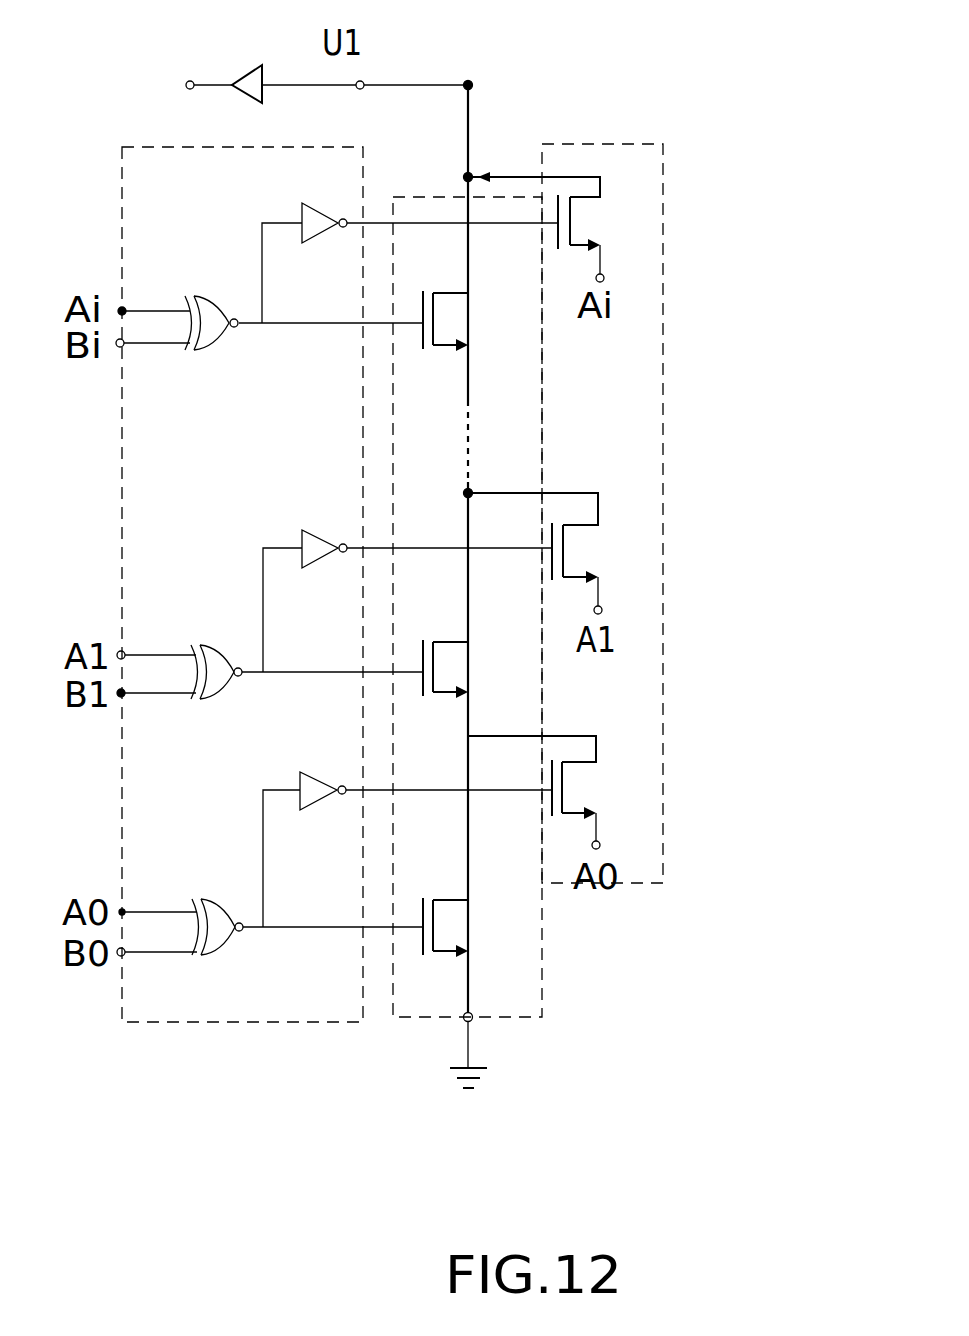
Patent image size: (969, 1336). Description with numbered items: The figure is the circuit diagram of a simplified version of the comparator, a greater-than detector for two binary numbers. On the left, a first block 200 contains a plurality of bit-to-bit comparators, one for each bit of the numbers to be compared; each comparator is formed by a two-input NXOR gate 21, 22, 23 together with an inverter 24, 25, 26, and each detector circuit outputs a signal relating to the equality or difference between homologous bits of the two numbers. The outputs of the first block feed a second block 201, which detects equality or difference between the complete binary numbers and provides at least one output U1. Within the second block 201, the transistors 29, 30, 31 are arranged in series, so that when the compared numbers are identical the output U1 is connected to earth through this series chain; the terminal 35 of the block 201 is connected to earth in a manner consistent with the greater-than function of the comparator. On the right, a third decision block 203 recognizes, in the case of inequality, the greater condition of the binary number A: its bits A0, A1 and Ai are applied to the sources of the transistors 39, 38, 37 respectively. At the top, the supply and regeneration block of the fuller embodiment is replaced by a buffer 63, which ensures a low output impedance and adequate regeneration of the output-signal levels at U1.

The NXOR gate 21 is at (215, 341).
The NXOR gate 22 is at (213, 648).
The NXOR gate 23 is at (217, 897).
The inverter 24 is at (317, 234).
The inverter 25 is at (320, 568).
The inverter 26 is at (311, 810).
The transistor 29 is at (443, 347).
The transistor 30 is at (445, 641).
The transistor 31 is at (448, 898).
The terminal 35 is at (463, 1026).
The transistor 37 is at (571, 218).
The transistor 38 is at (565, 539).
The transistor 39 is at (566, 784).
The buffer 63 is at (245, 68).
The first block 200 is at (118, 190).
The second block 201 is at (525, 1020).
The third decision block 203 is at (640, 884).